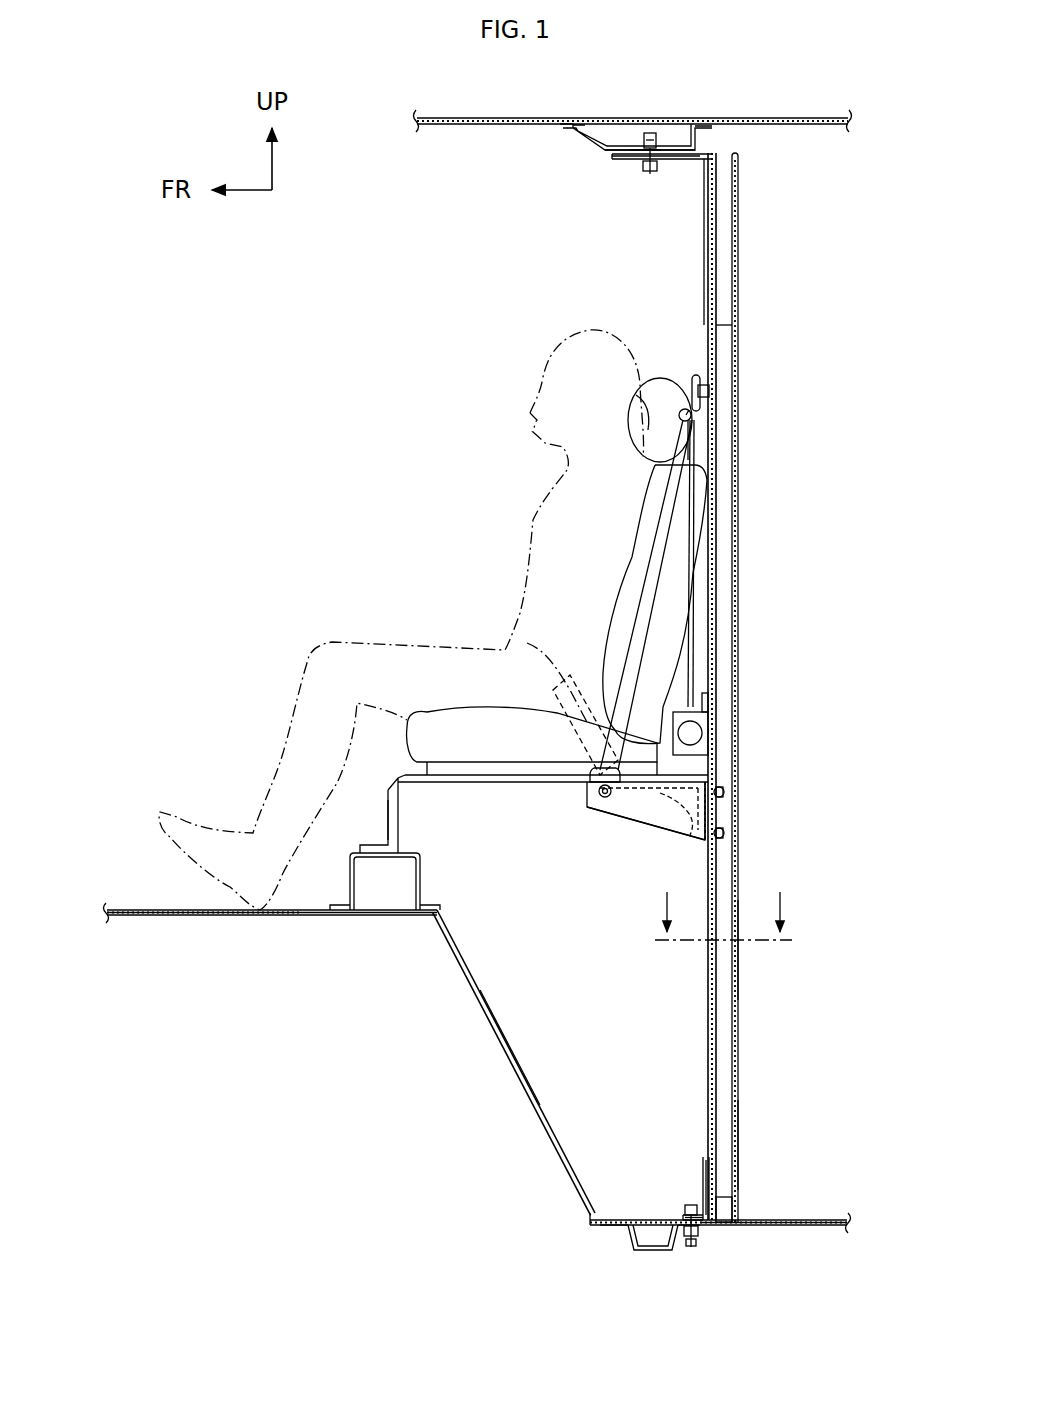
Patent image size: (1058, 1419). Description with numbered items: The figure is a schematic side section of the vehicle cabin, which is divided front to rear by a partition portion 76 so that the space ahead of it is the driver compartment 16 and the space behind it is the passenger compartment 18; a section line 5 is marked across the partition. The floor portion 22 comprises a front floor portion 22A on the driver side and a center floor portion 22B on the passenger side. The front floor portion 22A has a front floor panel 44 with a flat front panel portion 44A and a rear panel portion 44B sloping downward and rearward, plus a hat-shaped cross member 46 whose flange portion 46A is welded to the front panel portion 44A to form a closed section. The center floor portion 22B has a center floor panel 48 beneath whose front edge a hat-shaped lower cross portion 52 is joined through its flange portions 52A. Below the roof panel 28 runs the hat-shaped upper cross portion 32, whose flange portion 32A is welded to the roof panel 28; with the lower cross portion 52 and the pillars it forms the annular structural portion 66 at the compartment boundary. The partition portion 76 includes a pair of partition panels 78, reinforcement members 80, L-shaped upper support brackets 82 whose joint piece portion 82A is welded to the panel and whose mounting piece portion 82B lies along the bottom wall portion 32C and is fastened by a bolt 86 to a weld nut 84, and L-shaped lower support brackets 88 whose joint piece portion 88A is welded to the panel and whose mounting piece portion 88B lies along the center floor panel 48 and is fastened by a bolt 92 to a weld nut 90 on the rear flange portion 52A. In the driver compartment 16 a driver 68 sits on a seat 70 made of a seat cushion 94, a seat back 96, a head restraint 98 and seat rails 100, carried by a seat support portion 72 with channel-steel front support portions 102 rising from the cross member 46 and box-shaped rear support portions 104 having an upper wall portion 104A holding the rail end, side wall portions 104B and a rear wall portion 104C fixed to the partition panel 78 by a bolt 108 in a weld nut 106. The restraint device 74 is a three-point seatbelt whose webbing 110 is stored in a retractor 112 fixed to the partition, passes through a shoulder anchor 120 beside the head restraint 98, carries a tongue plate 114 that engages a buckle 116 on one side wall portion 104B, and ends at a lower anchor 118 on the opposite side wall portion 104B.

The section line 5- 5 is at (723, 902).
The driver compartment 16 is at (163, 908).
The passenger compartment 18 is at (803, 1220).
The floor portion 22 is at (833, 930).
The front floor portion 22A is at (492, 975).
The center floor portion 22B is at (800, 1130).
The roof panel 28 is at (525, 118).
The upper cross portion 32 is at (590, 140).
The flange portion 32A is at (705, 127).
The bottom wall portion 32C is at (633, 125).
The front floor panel 44 is at (262, 918).
The front panel portion 44A is at (198, 917).
The rear panel portion 44B is at (508, 1060).
The cross member 46 is at (426, 850).
The flange portion 46A is at (340, 906).
The center floor panel 48 is at (810, 1226).
The lower cross portion 52 is at (652, 1253).
The flange portions 52A is at (612, 1228).
The annular structural portion 66 is at (660, 103).
The driver 68 is at (568, 335).
The vehicle seat 70 is at (665, 355).
The seat support portion 72 is at (386, 820).
The restraint device 74 is at (700, 385).
The partition portion 76 is at (765, 203).
The partition panel 78 is at (708, 232).
The reinforcement member 80 is at (738, 433).
The upper support bracket 82 is at (703, 172).
The joint piece portion 82A is at (703, 190).
The mounting piece portion 82B is at (620, 158).
The weld nut 84 is at (655, 140).
The bolt 86 is at (650, 167).
The lower support bracket 88 is at (642, 1145).
The joint piece portion 88A is at (703, 1170).
The mounting piece portion 88B is at (682, 1216).
The weld nut 90 is at (690, 1247).
The bolt 92 is at (688, 1206).
The seat cushion 94 is at (480, 710).
The seat back 96 is at (628, 560).
The head restraint 98 is at (640, 410).
The seat rails 100 is at (535, 783).
The front support portions 102 is at (400, 812).
The rear support portions 104 is at (665, 842).
The upper wall portion 104A is at (706, 782).
The side wall portions 104B is at (625, 823).
The rear wall portion 104C is at (718, 812).
The weld nut 106 is at (722, 792).
The bolt 108 is at (685, 820).
The webbing 110 is at (640, 632).
The retractor 112 is at (708, 730).
The tongue plate 114 is at (660, 462).
The buckle 116 is at (553, 688).
The lower anchor 118 is at (590, 795).
The shoulder anchor 120 is at (709, 391).